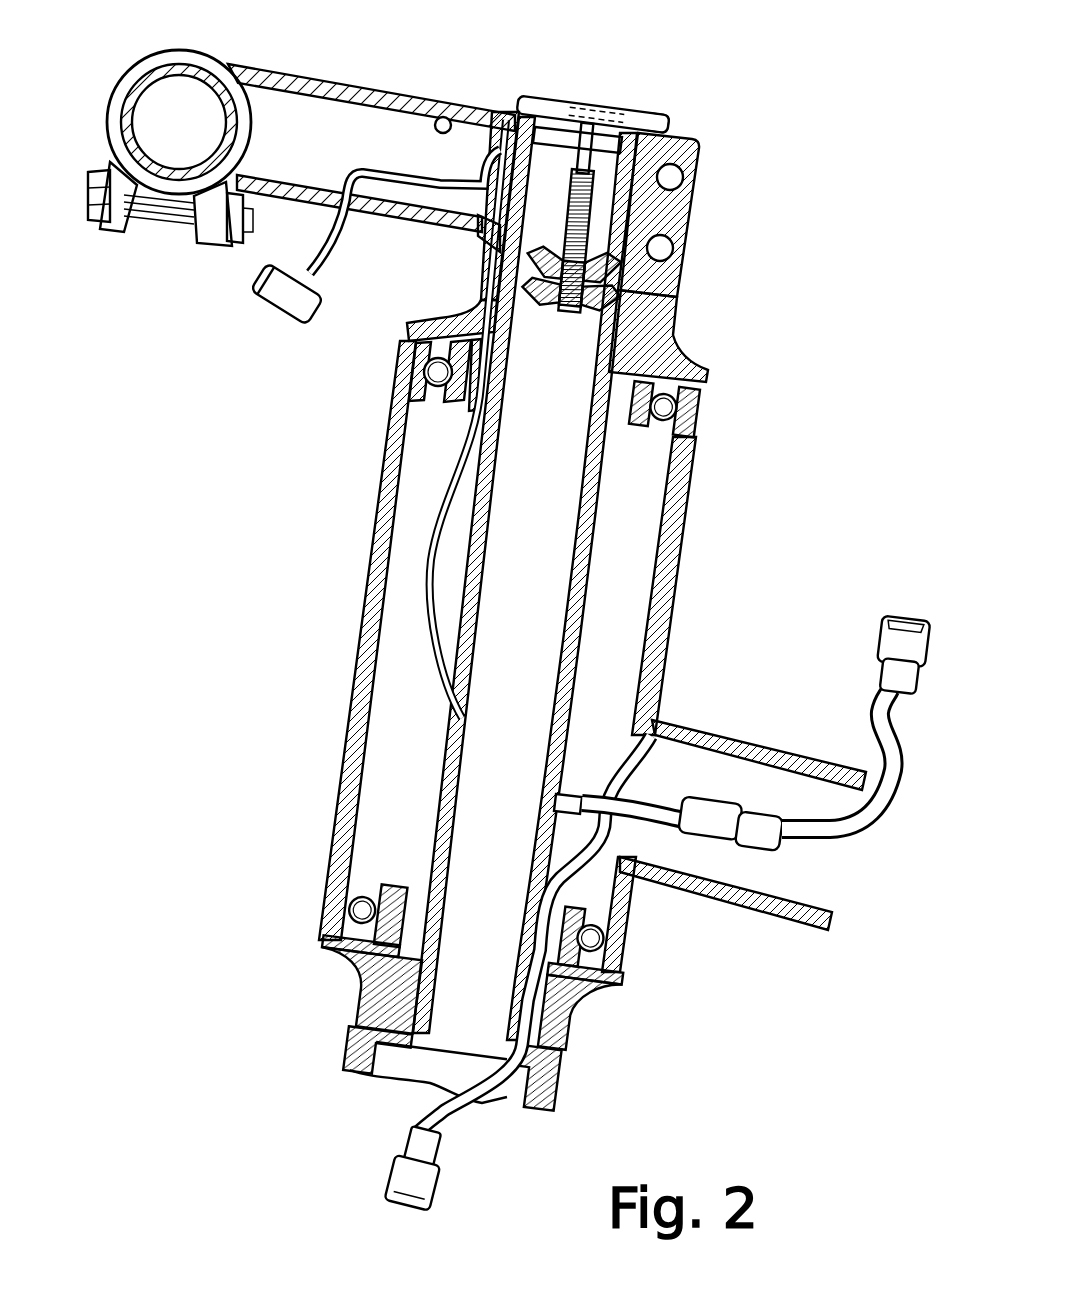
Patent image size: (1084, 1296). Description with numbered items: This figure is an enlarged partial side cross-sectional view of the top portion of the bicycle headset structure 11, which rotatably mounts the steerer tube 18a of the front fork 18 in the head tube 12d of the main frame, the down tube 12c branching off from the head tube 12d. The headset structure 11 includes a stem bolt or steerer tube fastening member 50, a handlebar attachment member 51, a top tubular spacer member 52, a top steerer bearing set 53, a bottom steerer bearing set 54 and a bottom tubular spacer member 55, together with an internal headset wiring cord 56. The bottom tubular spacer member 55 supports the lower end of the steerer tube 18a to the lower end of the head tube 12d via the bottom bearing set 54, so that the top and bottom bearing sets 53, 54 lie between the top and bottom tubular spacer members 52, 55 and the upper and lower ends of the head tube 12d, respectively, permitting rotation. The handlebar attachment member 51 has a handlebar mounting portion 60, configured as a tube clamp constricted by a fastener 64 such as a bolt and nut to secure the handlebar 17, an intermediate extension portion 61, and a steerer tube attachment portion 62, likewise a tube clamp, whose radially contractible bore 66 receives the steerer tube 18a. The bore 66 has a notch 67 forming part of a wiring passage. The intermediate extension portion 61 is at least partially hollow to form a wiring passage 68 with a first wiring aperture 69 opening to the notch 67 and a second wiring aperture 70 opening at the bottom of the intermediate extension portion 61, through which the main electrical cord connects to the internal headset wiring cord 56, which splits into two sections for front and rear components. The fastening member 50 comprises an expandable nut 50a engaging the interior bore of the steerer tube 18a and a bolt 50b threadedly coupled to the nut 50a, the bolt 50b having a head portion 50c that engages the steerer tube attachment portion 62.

The bicycle headset structure 11 is at (722, 334).
The down tube 12c is at (730, 730).
The head tube 12d is at (678, 580).
The handlebar 17 is at (178, 78).
The front fork 18 is at (352, 1075).
The steerer tube 18a is at (600, 634).
The steerer tube fastening member 50 is at (652, 108).
The expandable nut 50a is at (578, 312).
The bolt 50b is at (557, 210).
The head portion 50c is at (670, 116).
The handlebar attachment member 51 is at (371, 116).
The top tubular spacer member 52 is at (683, 304).
The top steerer bearing set 53 is at (652, 442).
The bottom steerer bearing set 54 is at (380, 864).
The bottom tubular spacer member 55 is at (578, 1016).
The internal headset wiring cord 56 is at (446, 496).
The handlebar mounting portion 60 is at (104, 234).
The intermediate extension portion 61 is at (318, 72).
The steerer tube attachment portion 62 is at (703, 167).
The fastener 64 is at (168, 237).
The radially contractible bore 66 is at (614, 99).
The notch 67 is at (497, 250).
The wiring passage 68 is at (470, 112).
The first wiring aperture 69 is at (486, 200).
The second wiring aperture 70 is at (350, 213).